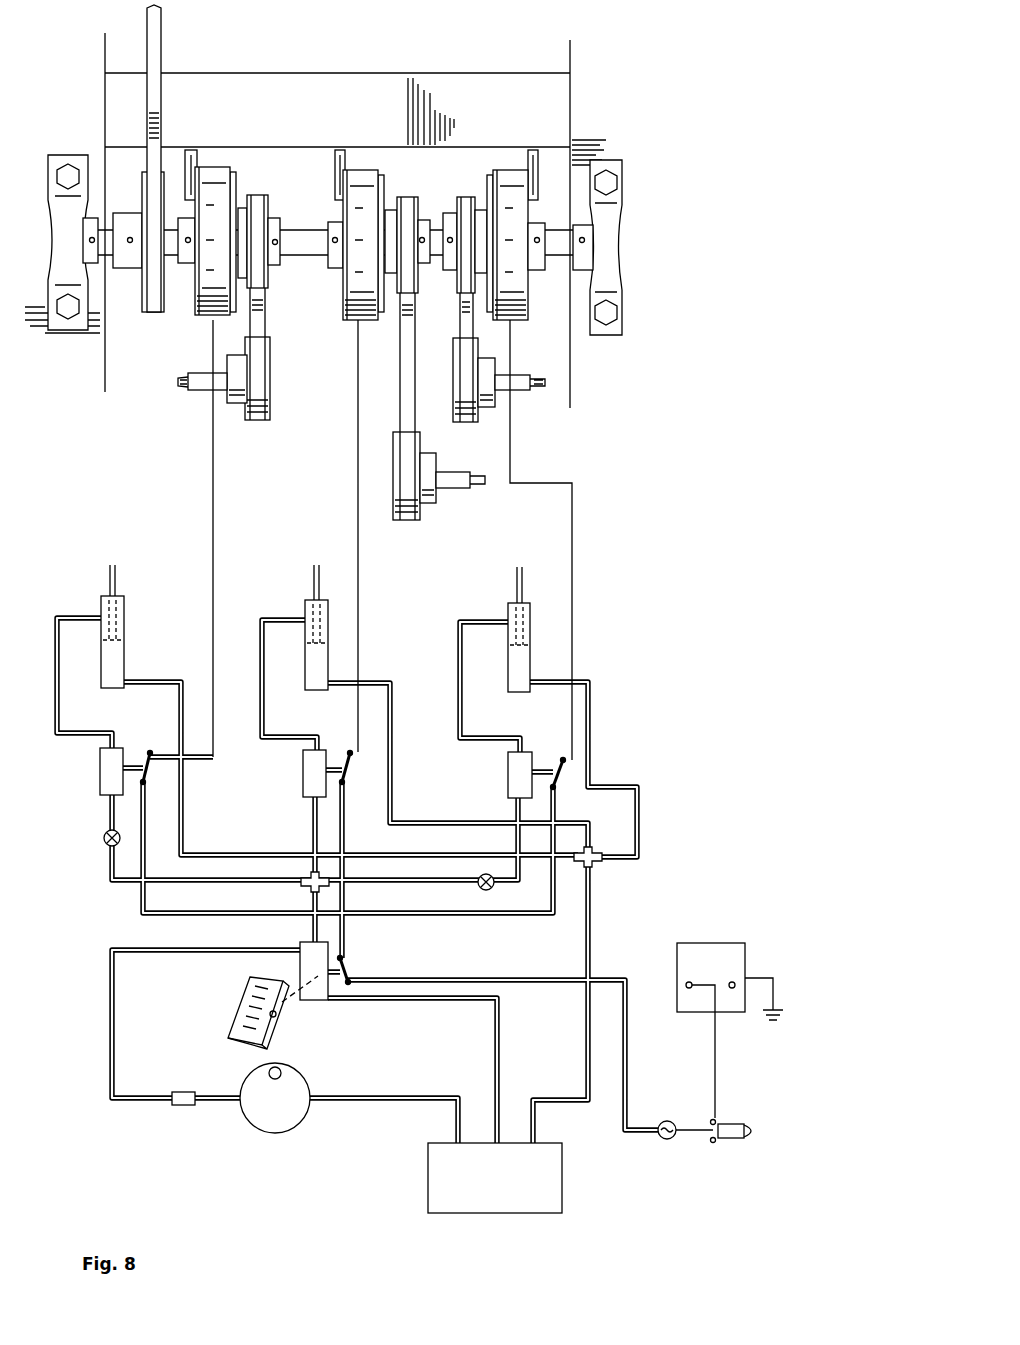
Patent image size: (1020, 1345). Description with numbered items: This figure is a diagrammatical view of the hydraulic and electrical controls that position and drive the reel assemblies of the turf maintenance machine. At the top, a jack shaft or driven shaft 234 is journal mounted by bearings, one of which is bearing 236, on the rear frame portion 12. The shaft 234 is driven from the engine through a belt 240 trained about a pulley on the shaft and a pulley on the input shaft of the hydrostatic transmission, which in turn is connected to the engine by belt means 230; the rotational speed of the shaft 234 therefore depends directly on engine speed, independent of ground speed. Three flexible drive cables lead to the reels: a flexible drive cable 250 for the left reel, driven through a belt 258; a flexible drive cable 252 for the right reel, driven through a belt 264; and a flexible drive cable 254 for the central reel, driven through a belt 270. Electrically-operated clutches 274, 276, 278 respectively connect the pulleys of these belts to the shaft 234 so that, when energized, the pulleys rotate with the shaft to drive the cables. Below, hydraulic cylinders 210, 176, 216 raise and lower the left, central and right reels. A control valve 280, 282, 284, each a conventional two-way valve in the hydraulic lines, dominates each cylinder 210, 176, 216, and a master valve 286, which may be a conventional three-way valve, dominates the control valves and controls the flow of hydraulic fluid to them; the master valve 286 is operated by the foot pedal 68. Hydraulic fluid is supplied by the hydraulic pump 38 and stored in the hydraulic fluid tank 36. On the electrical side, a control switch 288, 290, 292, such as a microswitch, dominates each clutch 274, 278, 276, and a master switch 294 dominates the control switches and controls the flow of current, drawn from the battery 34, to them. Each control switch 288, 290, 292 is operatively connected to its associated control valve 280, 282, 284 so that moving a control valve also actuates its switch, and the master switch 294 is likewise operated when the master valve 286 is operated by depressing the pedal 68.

The rear frame portion 12 is at (309, 88).
The belt 240 is at (156, 100).
The belt means 230 is at (68, 246).
The bearing 236 is at (612, 266).
The jack shaft 234 is at (306, 258).
The electrically-operated clutch 274 is at (205, 302).
The electrically-operated clutch 278 is at (356, 303).
The electrically-operated clutch 276 is at (520, 303).
The belt 258 is at (268, 322).
The belt 270 is at (408, 355).
The belt 264 is at (460, 303).
The flexible drive cable 250 is at (205, 389).
The flexible drive cable 252 is at (521, 388).
The flexible drive cable 254 is at (455, 490).
The hydraulic cylinder 210 is at (124, 660).
The hydraulic cylinder 176 is at (318, 690).
The hydraulic cylinder 216 is at (517, 680).
The control valve 280 is at (87, 776).
The control valve 282 is at (303, 771).
The control valve 284 is at (507, 786).
The control switch 288 is at (151, 751).
The control switch 290 is at (346, 783).
The control switch 292 is at (560, 760).
The master switch 294 is at (354, 971).
The master valve 286 is at (298, 949).
The pedal 68 is at (241, 1021).
The hydraulic pump 38 is at (308, 1086).
The hydraulic fluid tank 36 is at (426, 1178).
The battery 34 is at (680, 975).